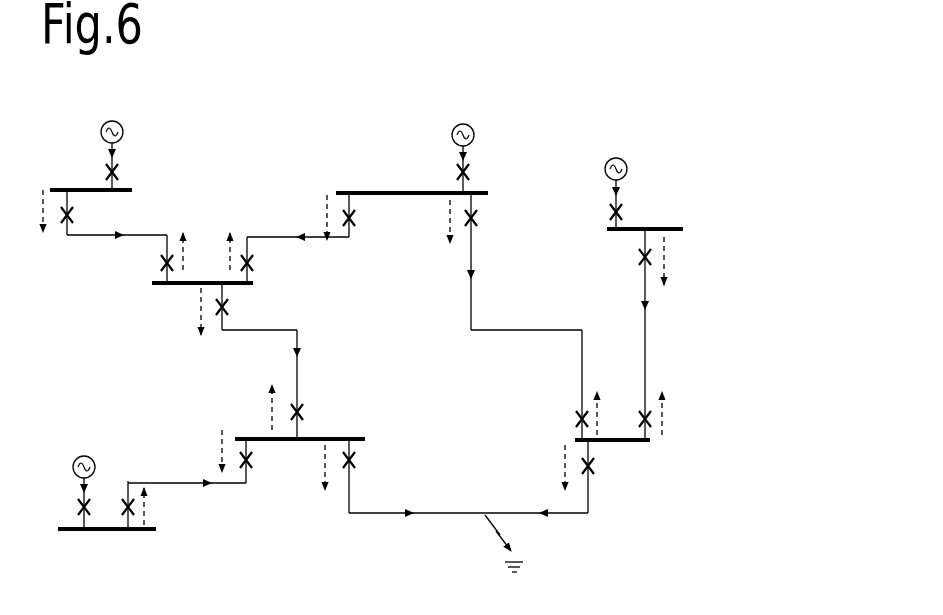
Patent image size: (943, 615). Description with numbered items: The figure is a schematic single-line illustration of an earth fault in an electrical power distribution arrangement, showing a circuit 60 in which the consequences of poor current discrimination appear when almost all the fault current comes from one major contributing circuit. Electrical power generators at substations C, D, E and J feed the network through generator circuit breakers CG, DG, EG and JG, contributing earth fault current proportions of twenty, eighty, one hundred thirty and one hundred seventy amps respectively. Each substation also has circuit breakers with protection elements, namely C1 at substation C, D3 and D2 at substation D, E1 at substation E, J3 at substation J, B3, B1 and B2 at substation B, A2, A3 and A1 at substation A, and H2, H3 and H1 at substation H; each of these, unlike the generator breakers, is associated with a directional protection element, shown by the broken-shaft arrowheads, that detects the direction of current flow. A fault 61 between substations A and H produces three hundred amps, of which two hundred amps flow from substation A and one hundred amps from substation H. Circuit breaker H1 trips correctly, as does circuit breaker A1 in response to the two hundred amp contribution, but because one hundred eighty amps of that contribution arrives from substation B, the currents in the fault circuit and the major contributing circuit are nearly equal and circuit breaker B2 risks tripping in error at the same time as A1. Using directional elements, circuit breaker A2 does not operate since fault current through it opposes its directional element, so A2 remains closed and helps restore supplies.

The circuit 60 is at (749, 271).
The fault 61 is at (522, 555).
The generator circuit breaker EG is at (92, 155).
The circuit breaker E1 is at (84, 212).
The circuit breaker B3 is at (147, 259).
The circuit breaker B1 is at (264, 260).
The circuit breaker B2 is at (279, 306).
The generator circuit breaker DG is at (444, 158).
The circuit breaker D3 is at (367, 215).
The circuit breaker D2 is at (491, 219).
The generator circuit breaker JG is at (632, 193).
The circuit breaker J3 is at (628, 257).
The circuit breaker H2 is at (563, 420).
The circuit breaker H3 is at (670, 422).
The circuit breaker H1 is at (651, 476).
The circuit breaker A2 is at (315, 414).
The circuit breaker A3 is at (266, 461).
The circuit breaker A1 is at (410, 476).
The generator circuit breaker CG is at (64, 492).
The circuit breaker C1 is at (152, 505).